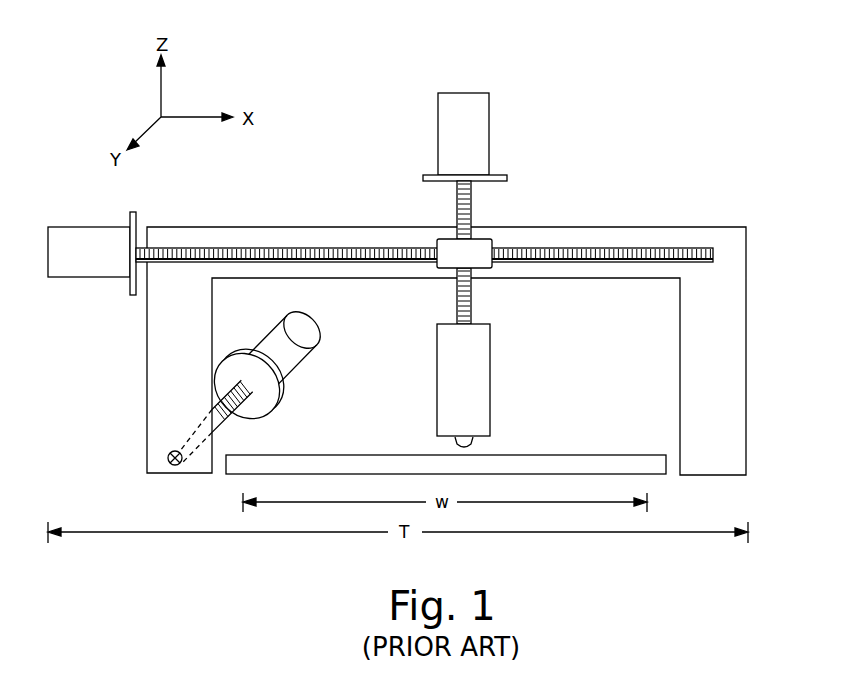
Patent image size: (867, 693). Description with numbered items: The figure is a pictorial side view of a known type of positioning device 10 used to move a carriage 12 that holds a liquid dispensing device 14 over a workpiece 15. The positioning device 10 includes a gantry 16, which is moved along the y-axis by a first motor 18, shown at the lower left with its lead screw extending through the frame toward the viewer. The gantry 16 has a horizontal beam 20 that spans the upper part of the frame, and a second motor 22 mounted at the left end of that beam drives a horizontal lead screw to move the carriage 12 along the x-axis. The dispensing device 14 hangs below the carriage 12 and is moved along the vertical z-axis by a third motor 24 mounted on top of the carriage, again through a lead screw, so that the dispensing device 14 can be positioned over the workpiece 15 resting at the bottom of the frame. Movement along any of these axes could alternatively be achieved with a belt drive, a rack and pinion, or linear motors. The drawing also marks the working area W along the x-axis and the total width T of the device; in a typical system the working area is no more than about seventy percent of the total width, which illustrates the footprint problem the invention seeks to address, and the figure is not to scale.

The positioning device 10 is at (627, 78).
The carriage 12 is at (484, 239).
The liquid dispensing device 14 is at (489, 393).
The workpiece 15 is at (580, 455).
The gantry 16 is at (302, 201).
The first motor 18 is at (316, 315).
The horizontal beam 20 is at (632, 228).
The second motor 22 is at (97, 227).
The third motor 24 is at (468, 102).